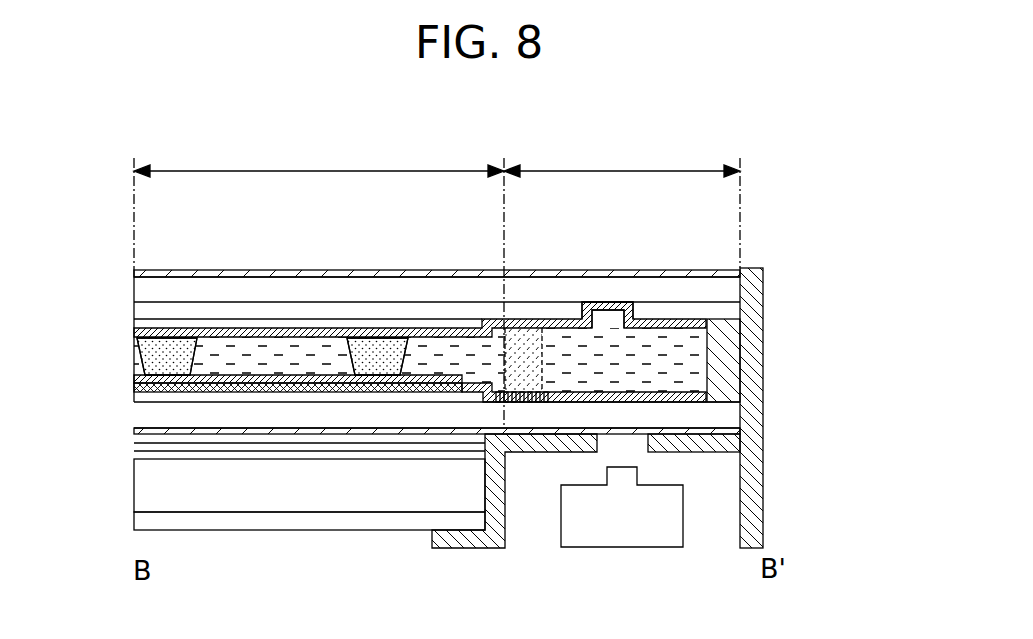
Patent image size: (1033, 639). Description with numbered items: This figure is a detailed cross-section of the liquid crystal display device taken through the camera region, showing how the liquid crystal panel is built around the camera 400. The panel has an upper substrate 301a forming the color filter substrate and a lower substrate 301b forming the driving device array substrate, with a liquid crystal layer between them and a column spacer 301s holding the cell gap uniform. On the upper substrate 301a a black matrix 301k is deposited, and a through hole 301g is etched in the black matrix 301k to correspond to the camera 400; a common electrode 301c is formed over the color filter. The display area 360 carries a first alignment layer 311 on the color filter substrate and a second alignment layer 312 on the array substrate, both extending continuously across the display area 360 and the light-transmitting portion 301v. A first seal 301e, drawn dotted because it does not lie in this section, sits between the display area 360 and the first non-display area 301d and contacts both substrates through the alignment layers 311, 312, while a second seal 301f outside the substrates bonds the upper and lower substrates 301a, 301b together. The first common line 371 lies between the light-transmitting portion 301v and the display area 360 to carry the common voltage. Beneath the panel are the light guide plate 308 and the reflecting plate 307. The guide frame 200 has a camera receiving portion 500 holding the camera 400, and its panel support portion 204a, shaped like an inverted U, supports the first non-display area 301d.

The display area 360 is at (319, 160).
The first non-display area 301d is at (622, 160).
The upper substrate 301a is at (256, 291).
The black matrix 301k is at (320, 312).
The common electrode 301c is at (386, 322).
The first seal 301e is at (538, 355).
The through hole 301g is at (607, 312).
The first alignment layer 311 is at (673, 295).
The second alignment layer 312 is at (627, 395).
The second seal 301f is at (733, 381).
The light-transmitting portion 301v is at (672, 382).
The column spacer 301s is at (158, 345).
The lower substrate 301b is at (155, 417).
The light guide plate 308 is at (153, 493).
The reflecting plate 307 is at (152, 520).
The first common line 371 is at (549, 402).
The camera 400 is at (597, 527).
The camera receiving portion 500 is at (707, 527).
The panel support portion 204a is at (697, 445).
The guide frame 200 is at (763, 505).